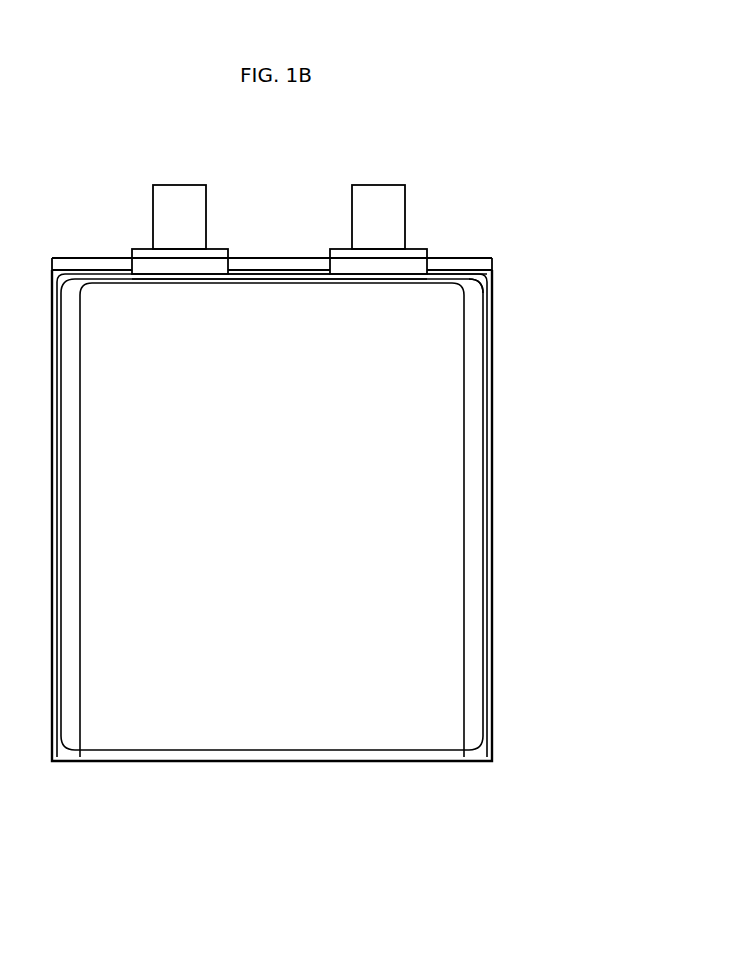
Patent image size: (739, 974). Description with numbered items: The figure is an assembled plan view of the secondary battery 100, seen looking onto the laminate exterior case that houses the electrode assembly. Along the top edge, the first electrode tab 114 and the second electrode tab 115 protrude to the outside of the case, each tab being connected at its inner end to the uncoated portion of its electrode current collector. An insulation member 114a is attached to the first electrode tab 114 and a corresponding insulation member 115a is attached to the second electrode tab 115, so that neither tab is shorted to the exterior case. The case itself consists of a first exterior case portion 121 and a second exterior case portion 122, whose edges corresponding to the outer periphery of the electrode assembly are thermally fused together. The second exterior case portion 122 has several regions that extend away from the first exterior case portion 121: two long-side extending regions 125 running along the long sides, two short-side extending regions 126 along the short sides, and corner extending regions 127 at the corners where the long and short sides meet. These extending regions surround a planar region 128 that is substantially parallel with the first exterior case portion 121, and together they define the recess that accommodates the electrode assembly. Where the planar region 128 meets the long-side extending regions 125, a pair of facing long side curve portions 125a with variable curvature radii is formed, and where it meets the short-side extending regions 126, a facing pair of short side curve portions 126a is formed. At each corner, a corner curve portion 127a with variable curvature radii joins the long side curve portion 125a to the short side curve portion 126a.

The secondary battery 100 is at (551, 179).
The first electrode tab 114 is at (180, 192).
The insulation member 114a is at (219, 254).
The second electrode tab 115 is at (380, 192).
The insulation member 115a is at (416, 254).
The first exterior case portion 121 is at (87, 262).
The second exterior case portion 122 is at (503, 771).
The long-side extending region 125 is at (488, 397).
The long side curve portion 125a is at (472, 505).
The short-side extending region 126 is at (455, 273).
The short side curve portion 126a is at (283, 280).
The corner extending region 127 is at (495, 265).
The corner curve portion 127a is at (493, 280).
The planar region 128 is at (452, 673).